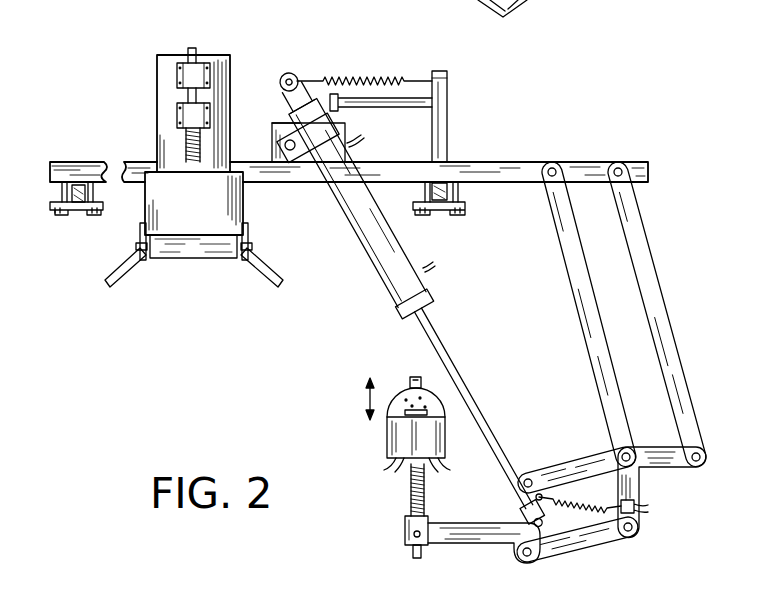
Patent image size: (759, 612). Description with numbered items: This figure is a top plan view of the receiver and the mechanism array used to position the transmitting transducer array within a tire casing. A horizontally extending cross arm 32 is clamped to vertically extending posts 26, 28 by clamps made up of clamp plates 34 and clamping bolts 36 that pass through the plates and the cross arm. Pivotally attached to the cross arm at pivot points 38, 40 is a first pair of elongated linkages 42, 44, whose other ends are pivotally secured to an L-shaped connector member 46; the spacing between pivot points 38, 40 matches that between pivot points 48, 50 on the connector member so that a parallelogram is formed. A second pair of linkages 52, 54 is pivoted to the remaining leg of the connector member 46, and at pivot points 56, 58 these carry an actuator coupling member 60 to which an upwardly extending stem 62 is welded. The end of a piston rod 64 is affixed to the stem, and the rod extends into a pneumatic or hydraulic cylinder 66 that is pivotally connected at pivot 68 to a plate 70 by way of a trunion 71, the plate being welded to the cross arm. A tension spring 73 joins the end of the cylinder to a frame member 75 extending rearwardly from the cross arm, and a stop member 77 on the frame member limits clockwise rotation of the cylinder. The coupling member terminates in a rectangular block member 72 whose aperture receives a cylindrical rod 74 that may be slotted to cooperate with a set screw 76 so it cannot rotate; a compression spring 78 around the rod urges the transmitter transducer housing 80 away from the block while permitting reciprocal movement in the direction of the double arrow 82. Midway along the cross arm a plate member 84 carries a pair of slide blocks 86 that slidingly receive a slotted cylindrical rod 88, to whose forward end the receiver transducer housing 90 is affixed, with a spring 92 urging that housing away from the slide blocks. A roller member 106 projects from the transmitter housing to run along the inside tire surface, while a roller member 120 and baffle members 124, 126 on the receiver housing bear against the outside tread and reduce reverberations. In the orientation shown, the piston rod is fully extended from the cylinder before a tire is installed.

The vertically extending post 26 is at (78, 185).
The vertically extending post 28 is at (448, 182).
The cross arm 32 is at (93, 162).
The clamp plate 34 is at (78, 212).
The clamping bolt 36 is at (55, 197).
The pivot point 38 is at (554, 168).
The pivot point 40 is at (620, 168).
The linkage 42 is at (572, 285).
The linkage 44 is at (662, 287).
The L-shaped connector member 46 is at (665, 470).
The pivot point 48 is at (630, 450).
The pivot point 50 is at (700, 449).
The linkage member 52 is at (580, 460).
The linkage member 54 is at (575, 546).
The pivot point 56 is at (528, 478).
The pivot point 58 is at (527, 562).
The actuator coupling member 60 is at (476, 544).
The stem 62 is at (525, 512).
The piston rod 64 is at (430, 345).
The cylinder 66 is at (355, 230).
The pivot 68 is at (282, 160).
The plate 70 is at (285, 122).
The trunion 71 is at (272, 120).
The rectangular block member 72 is at (405, 530).
The tension spring 73 is at (345, 74).
The cylindrical rod 74 is at (413, 556).
The frame member 75 is at (448, 91).
The set screw 76 is at (420, 532).
The stop member 77 is at (376, 108).
The compression spring 78 is at (410, 502).
The transmitter transducer housing 80 is at (387, 436).
The double arrow 82 is at (366, 394).
The plate member 84 is at (216, 55).
The slide block 86 is at (177, 73).
The cylindrical rod 88 is at (192, 48).
The receiver transducer housing 90 is at (204, 219).
The spring 92 is at (185, 143).
The roller member 106 is at (415, 377).
The roller member 120 is at (175, 258).
The baffle member 124 is at (275, 285).
The baffle member 126 is at (115, 285).